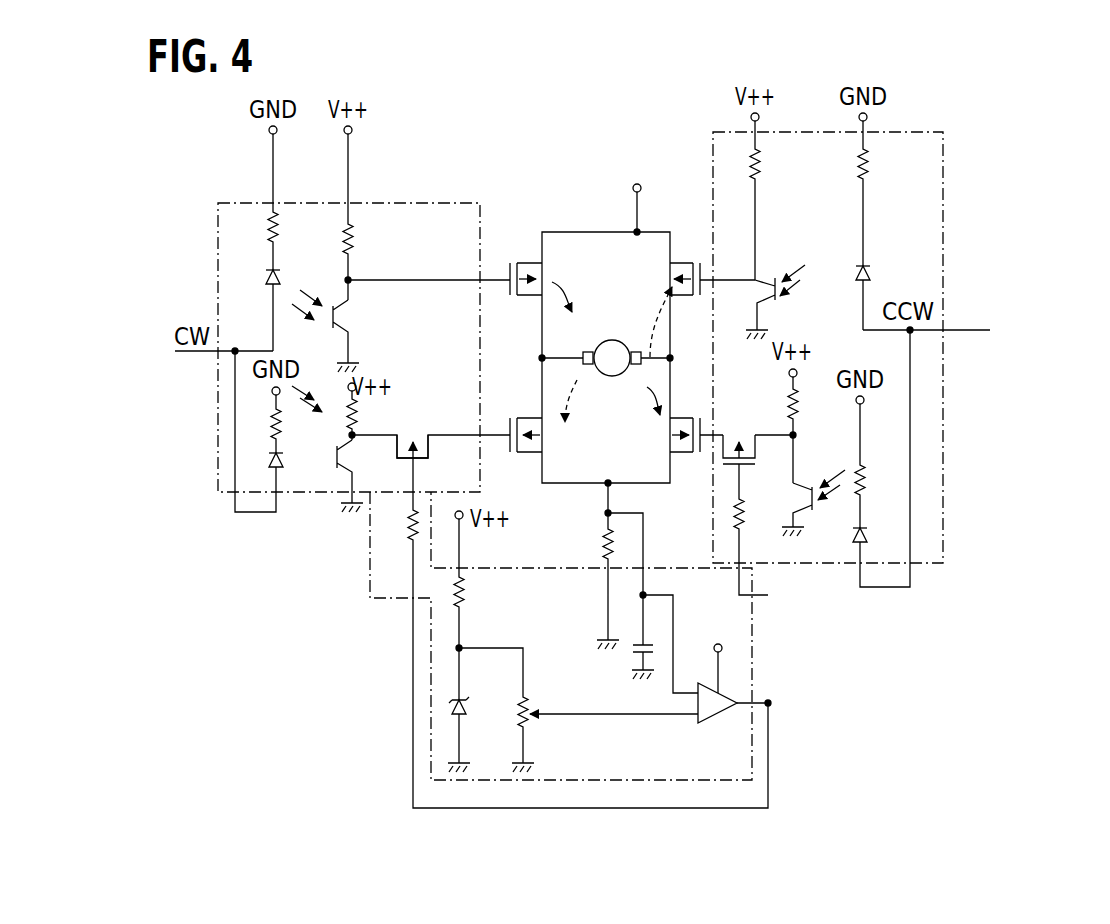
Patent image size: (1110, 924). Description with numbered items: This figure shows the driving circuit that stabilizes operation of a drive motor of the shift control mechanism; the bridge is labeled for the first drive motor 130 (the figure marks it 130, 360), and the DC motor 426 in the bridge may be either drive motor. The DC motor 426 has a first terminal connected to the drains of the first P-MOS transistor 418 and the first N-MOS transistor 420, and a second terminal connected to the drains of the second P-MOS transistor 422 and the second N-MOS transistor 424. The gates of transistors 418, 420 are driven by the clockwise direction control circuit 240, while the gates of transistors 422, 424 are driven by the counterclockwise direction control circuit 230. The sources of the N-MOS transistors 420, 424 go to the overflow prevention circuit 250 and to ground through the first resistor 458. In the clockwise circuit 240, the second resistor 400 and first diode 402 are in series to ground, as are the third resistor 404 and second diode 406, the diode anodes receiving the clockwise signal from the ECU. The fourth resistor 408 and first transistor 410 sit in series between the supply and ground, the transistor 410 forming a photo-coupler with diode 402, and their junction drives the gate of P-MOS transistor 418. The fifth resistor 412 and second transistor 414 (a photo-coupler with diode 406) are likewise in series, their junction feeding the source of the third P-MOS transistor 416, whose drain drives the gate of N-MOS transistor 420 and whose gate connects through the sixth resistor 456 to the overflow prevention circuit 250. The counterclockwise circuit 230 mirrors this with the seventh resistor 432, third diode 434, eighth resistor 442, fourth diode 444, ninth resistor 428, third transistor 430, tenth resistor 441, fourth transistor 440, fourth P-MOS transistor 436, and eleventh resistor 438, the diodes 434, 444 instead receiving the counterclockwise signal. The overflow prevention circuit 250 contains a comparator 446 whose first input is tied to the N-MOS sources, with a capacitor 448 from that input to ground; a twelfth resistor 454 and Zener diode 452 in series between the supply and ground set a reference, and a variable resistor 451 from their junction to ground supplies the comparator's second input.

The first drive motor 130 is at (600, 300).
The motor drive circuit (H-bridge) 360 is at (600, 300).
The counterclockwise direction control circuit 230 is at (945, 215).
The clockwise direction control circuit 240 is at (453, 200).
The overflow prevention circuit 250 is at (617, 782).
The second resistor 400 is at (280, 226).
The first diode 402 is at (282, 274).
The third resistor 404 is at (284, 413).
The second diode 406 is at (284, 462).
The fourth resistor 408 is at (356, 240).
The first transistor 410 is at (330, 315).
The fifth resistor 412 is at (362, 414).
The second transistor 414 is at (355, 458).
The third P-MOS transistor 416 is at (432, 437).
The first P-MOS transistor 418 is at (520, 300).
The first N-MOS transistor 420 is at (519, 416).
The second P-MOS transistor 422 is at (690, 300).
The second N-MOS transistor 424 is at (699, 414).
The DC motor 426 is at (606, 340).
The ninth resistor 428 is at (762, 163).
The third transistor 430 is at (756, 290).
The seventh resistor 432 is at (870, 163).
The third diode 434 is at (872, 274).
The fourth P-MOS transistor 436 is at (756, 447).
The eleventh resistor 438 is at (750, 511).
The fourth transistor 440 is at (800, 480).
The tenth resistor 441 is at (783, 408).
The eighth resistor 442 is at (868, 477).
The fourth diode 444 is at (867, 537).
The comparator 446 is at (718, 722).
The capacitor 448 is at (632, 649).
The variable resistor 451 is at (532, 722).
The Zener diode 452 is at (467, 704).
The twelfth resistor 454 is at (468, 597).
The sixth resistor 456 is at (400, 522).
The first resistor 458 is at (596, 548).